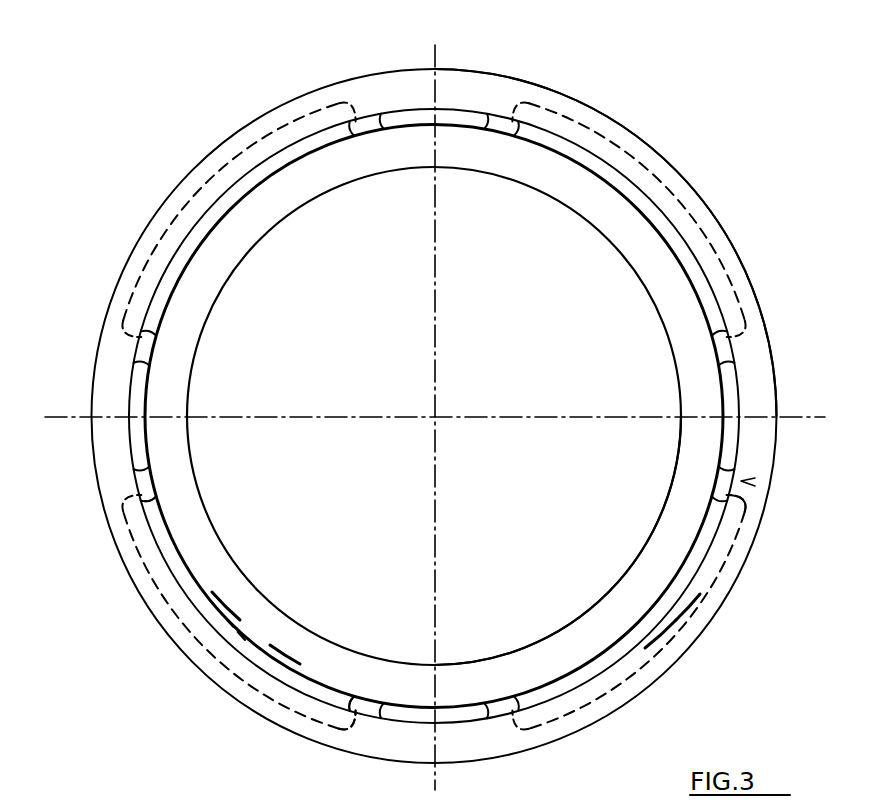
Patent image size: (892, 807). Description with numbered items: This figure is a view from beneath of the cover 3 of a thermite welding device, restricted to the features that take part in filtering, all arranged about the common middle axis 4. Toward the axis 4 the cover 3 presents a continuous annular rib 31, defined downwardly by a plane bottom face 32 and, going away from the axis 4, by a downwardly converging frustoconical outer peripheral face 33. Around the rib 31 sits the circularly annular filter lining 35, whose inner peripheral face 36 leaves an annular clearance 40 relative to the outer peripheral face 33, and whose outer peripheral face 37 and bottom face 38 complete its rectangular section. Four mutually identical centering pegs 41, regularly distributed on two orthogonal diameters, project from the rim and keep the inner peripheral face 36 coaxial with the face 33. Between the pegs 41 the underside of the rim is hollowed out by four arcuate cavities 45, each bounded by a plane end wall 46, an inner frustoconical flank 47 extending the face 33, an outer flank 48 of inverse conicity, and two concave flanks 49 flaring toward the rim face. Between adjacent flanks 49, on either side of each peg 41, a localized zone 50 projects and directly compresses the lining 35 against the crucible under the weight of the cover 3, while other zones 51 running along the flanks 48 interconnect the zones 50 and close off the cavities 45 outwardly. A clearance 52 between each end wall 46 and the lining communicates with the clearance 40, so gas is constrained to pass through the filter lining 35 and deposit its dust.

The cover 3 is at (103, 563).
The middle axis 4 is at (437, 414).
The annular rib 31 is at (618, 600).
The bottom face 32 is at (662, 556).
The outer peripheral face 33 is at (660, 606).
The filter lining 35 is at (749, 481).
The inner peripheral face 36 is at (730, 483).
The outer peripheral face 37 is at (767, 507).
The bottom face 38 is at (748, 526).
The annular clearance 40 is at (688, 579).
The centering pegs 41 is at (455, 128).
The arcuate cavities 45 is at (228, 213).
The end wall 46 is at (226, 633).
The flank 47 is at (284, 673).
The flank 48 is at (307, 704).
The concave flanks 49 is at (152, 510).
The localized zone 50 is at (368, 124).
The other zones 51 is at (198, 192).
The clearance 52 is at (386, 462).